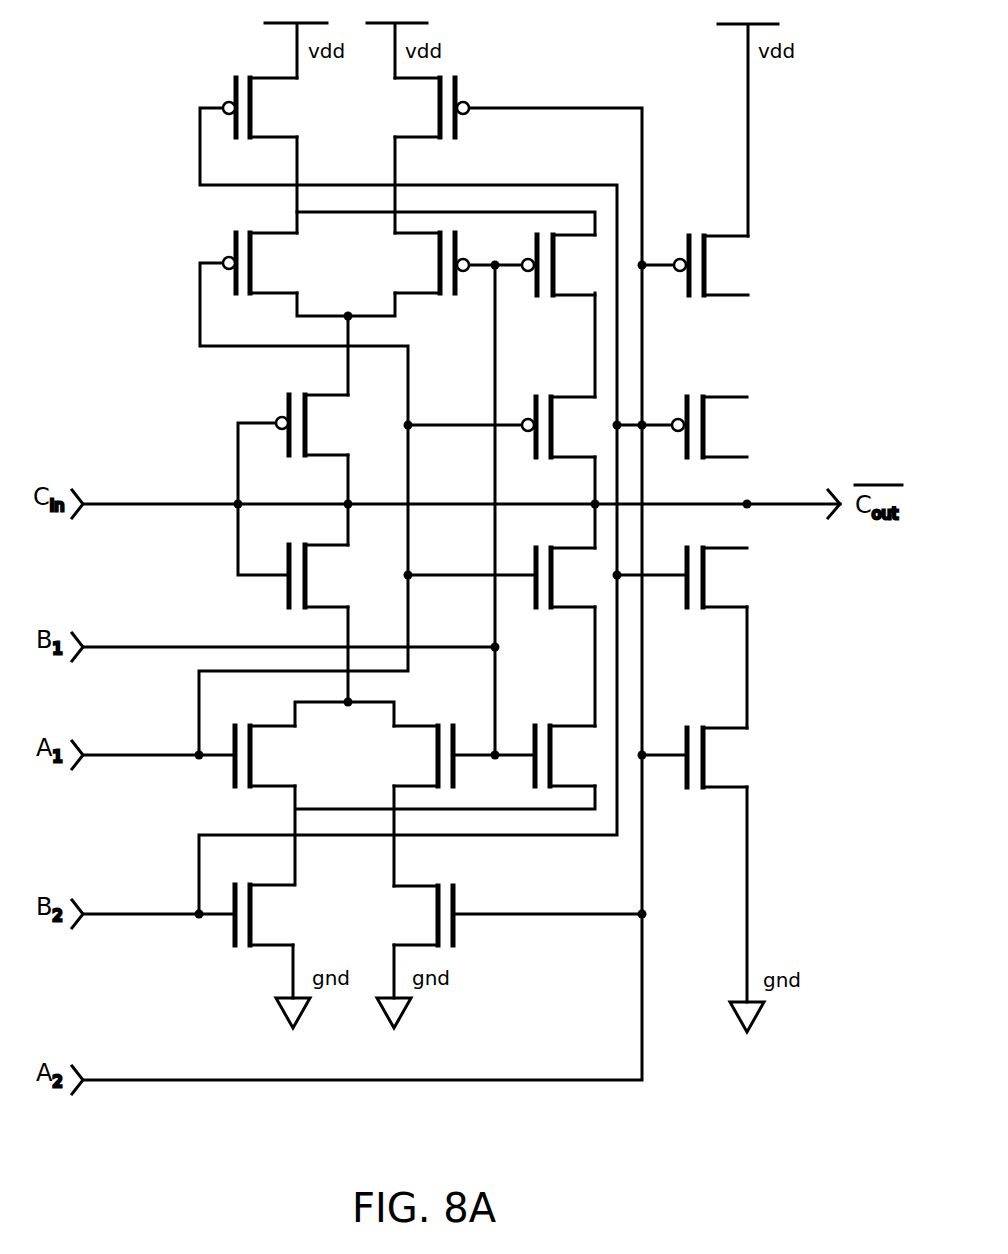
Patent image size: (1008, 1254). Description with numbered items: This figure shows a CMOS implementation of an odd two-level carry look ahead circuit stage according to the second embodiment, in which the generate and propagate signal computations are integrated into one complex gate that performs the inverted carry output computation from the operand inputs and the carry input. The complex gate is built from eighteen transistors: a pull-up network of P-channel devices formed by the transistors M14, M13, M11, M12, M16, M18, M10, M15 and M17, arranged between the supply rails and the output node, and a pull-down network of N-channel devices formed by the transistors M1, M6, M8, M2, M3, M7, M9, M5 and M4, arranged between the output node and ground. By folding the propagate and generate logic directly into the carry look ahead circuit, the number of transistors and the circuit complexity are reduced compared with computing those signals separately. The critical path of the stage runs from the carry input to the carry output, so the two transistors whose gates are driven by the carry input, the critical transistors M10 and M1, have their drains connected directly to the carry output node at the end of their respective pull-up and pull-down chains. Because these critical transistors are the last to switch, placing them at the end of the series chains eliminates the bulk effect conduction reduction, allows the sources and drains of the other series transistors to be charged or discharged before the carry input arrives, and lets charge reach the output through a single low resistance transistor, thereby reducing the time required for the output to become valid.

The critical transistor M1 is at (320, 576).
The transistor M2 is at (266, 756).
The transistor M3 is at (418, 756).
The transistor M4 is at (418, 915).
The transistor M5 is at (265, 915).
The transistor M6 is at (567, 577).
The transistor M7 is at (565, 756).
The transistor M8 is at (718, 577).
The transistor M9 is at (718, 757).
The critical transistor M10 is at (321, 425).
The transistor M11 is at (267, 263).
The transistor M12 is at (427, 263).
The transistor M13 is at (427, 107).
The transistor M14 is at (267, 107).
The transistor M15 is at (567, 427).
The transistor M16 is at (566, 265).
The transistor M17 is at (718, 427).
The transistor M18 is at (719, 265).